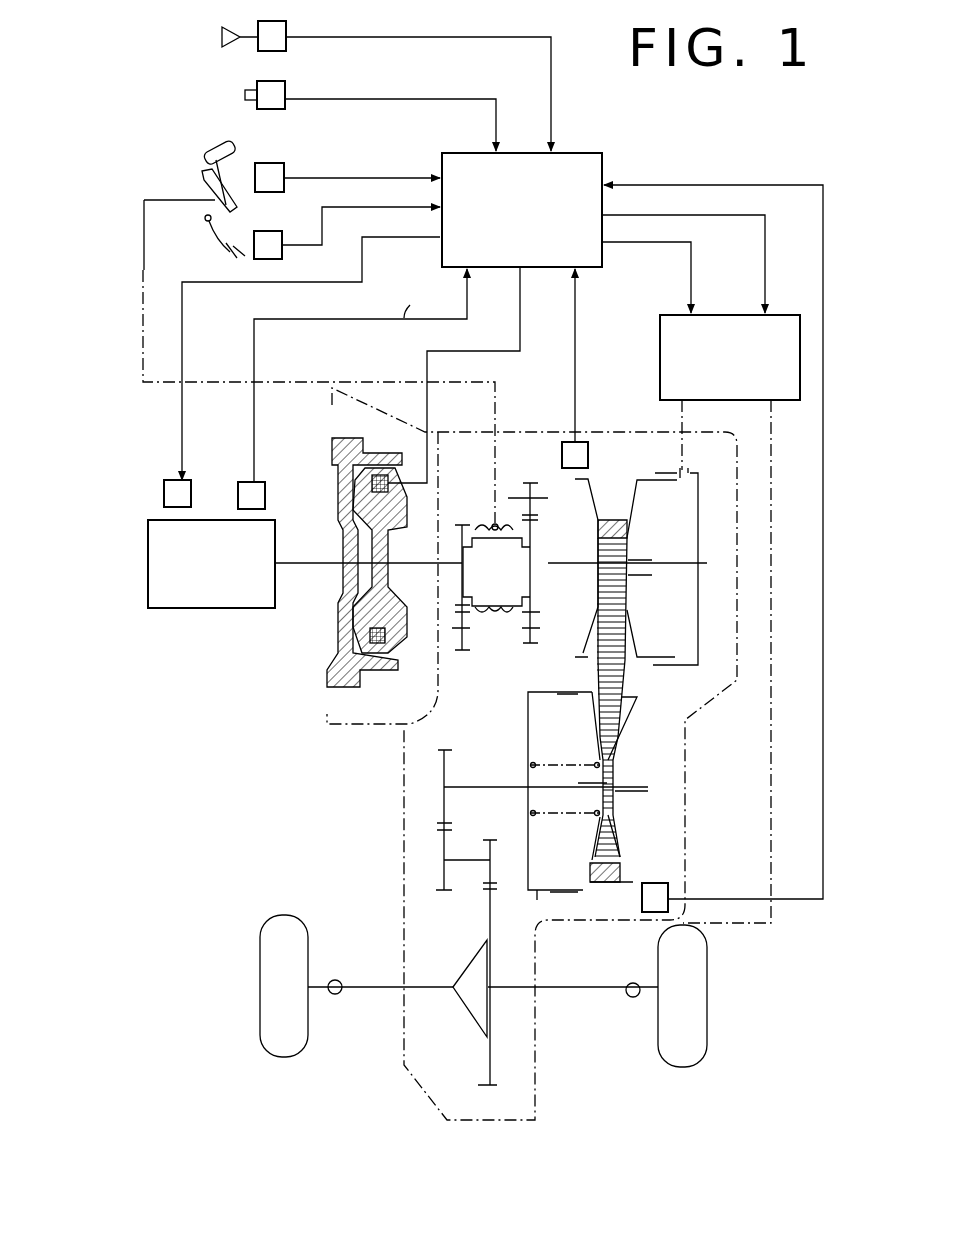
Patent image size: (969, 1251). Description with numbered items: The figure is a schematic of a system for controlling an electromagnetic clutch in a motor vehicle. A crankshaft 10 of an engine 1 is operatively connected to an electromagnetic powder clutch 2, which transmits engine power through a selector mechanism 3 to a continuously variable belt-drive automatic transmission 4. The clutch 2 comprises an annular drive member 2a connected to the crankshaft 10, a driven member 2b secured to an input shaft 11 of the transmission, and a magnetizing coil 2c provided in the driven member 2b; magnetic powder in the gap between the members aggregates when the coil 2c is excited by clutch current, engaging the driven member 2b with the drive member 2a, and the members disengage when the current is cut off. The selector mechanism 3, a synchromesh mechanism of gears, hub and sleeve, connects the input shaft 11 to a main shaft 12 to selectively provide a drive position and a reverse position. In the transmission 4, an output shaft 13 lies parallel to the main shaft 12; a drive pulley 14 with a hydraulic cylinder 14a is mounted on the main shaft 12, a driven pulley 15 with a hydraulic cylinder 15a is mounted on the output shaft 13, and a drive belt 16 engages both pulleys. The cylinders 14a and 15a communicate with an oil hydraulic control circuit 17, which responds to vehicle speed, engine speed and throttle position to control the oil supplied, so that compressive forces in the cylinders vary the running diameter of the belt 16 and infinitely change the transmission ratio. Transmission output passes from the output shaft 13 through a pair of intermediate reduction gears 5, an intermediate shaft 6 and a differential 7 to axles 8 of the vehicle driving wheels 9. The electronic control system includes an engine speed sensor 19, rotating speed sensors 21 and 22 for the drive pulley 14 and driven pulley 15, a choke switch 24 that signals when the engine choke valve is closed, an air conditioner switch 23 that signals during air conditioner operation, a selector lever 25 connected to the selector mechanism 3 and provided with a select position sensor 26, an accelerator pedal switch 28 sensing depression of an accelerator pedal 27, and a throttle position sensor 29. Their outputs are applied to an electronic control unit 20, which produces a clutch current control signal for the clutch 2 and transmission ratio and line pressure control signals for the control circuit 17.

The engine 1 is at (180, 612).
The electromagnetic powder clutch 2 is at (400, 477).
The annular drive member 2a is at (332, 452).
The driven member 2b is at (398, 518).
The magnetizing coil 2c is at (386, 475).
The selector mechanism 3 is at (482, 522).
The continuously variable belt-drive automatic transmission 4 is at (645, 556).
The intermediate reduction gears 5 is at (448, 748).
The intermediate shaft 6 is at (462, 858).
The differential 7 is at (470, 966).
The axles 8 is at (378, 982).
The vehicle driving wheels 9 is at (308, 1028).
The crankshaft 10 is at (324, 568).
The input shaft 11 is at (412, 566).
The main shaft 12 is at (576, 570).
The output shaft 13 is at (488, 785).
The drive pulley 14 is at (590, 505).
The hydraulic cylinder 14a is at (690, 538).
The driven pulley 15 is at (622, 700).
The hydraulic cylinder 15a is at (540, 708).
The drive belt 16 is at (592, 672).
The oil hydraulic control circuit 17 is at (660, 355).
The engine speed sensor 19 is at (238, 484).
The electronic control unit 20 is at (598, 156).
The rotating speed sensor 21 is at (588, 455).
The rotating speed sensor 22 is at (660, 884).
The air conditioner switch 23 is at (286, 93).
The choke switch 24 is at (286, 31).
The selector lever 25 is at (207, 150).
The select position sensor 26 is at (284, 168).
The accelerator pedal 27 is at (214, 245).
The accelerator pedal switch 28 is at (282, 238).
The throttle position sensor 29 is at (164, 482).